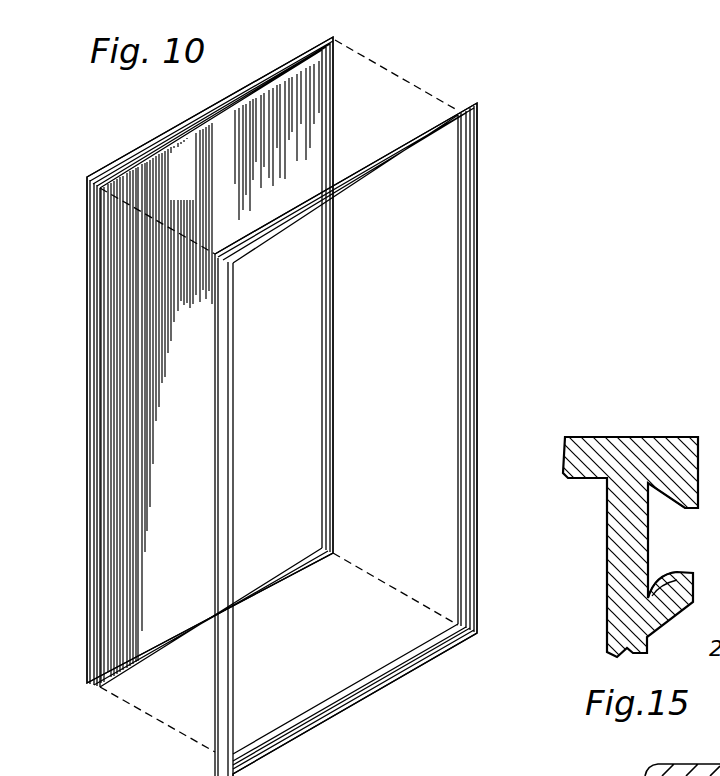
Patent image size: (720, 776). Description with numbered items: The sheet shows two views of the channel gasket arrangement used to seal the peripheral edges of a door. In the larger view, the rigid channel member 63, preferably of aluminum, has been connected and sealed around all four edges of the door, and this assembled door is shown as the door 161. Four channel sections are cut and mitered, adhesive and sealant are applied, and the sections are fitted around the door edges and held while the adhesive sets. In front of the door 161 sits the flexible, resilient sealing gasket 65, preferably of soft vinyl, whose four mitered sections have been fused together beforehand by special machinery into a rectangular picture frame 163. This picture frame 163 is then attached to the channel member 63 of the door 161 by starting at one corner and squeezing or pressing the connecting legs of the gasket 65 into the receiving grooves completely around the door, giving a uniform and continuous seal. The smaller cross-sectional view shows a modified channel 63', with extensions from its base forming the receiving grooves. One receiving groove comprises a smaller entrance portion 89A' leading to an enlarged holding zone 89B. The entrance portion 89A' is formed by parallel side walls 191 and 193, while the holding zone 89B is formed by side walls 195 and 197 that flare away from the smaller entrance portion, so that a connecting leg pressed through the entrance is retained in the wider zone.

In FIG. 10, the door with channel members 161 is at (86, 320).
In FIG. 10, the picture frame 163 is at (488, 253).
In FIG. 10, the channel member 63 is at (219, 360).
In FIG. 10, the sealing gasket 65 is at (353, 168).
In FIG. 15, the entrance portion 89A' is at (639, 528).
In FIG. 15, the holding zone 89B is at (658, 543).
In FIG. 15, the side wall 191 is at (693, 518).
In FIG. 15, the side wall 193 is at (677, 560).
In FIG. 15, the side wall 195 is at (660, 503).
In FIG. 15, the side wall 197 is at (665, 580).
In FIG. 15, the channel 63' is at (615, 753).